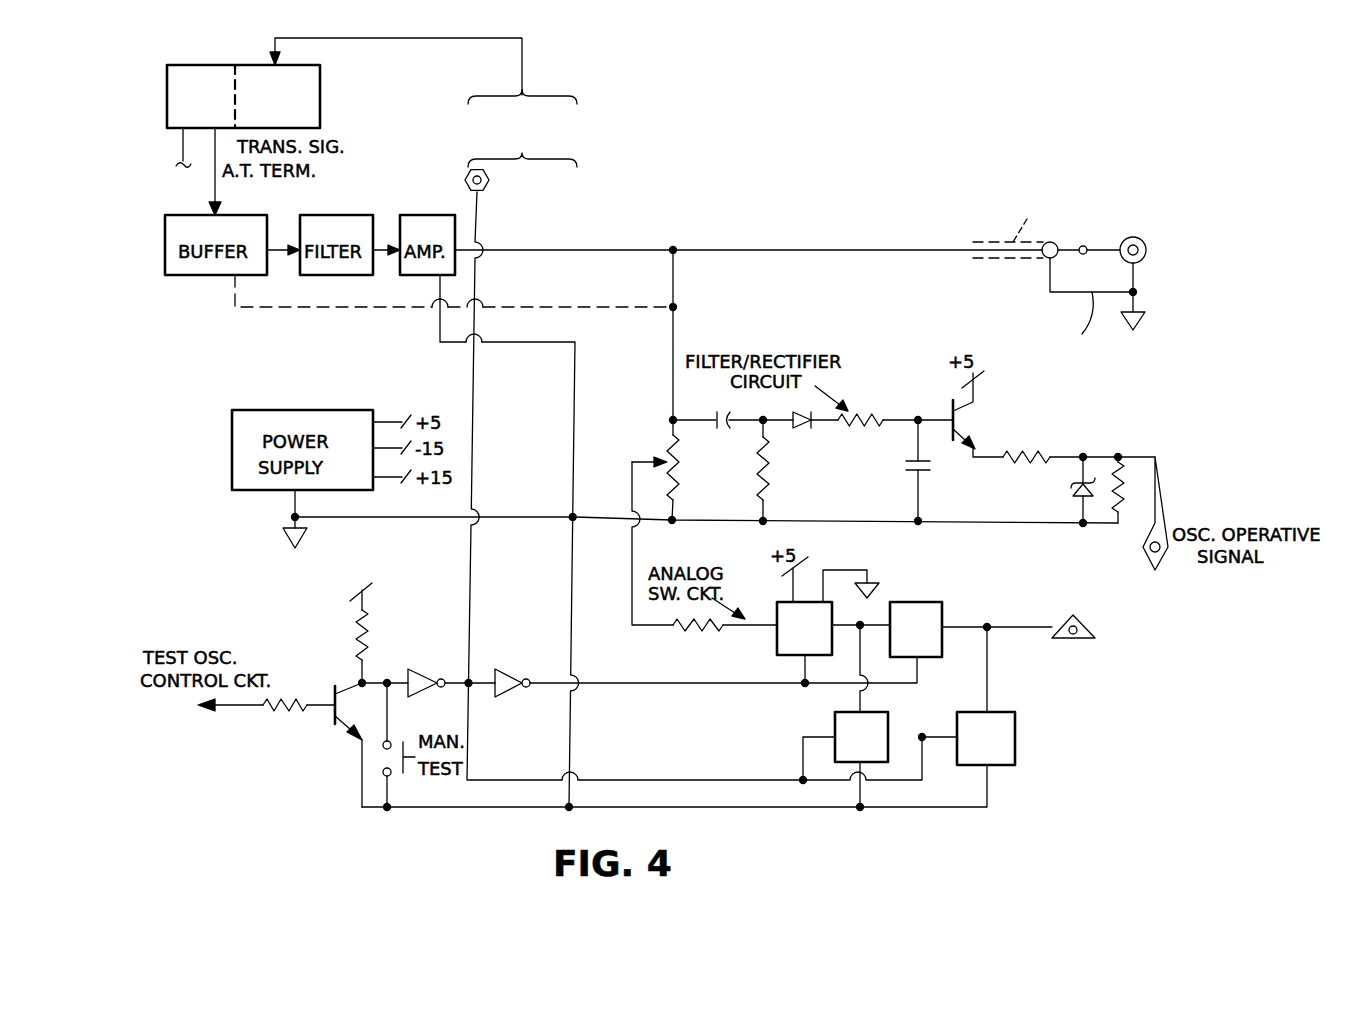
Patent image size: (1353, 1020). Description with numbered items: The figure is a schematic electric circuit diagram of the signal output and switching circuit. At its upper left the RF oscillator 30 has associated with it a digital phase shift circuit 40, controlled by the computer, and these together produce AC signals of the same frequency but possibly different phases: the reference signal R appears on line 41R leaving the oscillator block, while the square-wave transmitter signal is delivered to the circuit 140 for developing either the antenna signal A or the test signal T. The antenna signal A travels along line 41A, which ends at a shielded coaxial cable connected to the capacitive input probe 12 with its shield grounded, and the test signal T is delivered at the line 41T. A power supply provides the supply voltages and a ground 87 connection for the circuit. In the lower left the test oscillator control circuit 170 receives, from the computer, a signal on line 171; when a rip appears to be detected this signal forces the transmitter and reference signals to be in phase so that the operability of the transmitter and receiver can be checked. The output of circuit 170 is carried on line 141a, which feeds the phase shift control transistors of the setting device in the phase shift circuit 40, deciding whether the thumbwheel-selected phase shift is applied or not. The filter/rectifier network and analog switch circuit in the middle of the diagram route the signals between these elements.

The RF oscillator 30 is at (219, 63).
The digital phase shift circuit 40 is at (320, 92).
The reference signal line 41R is at (183, 147).
The signal developing circuit 140 is at (218, 292).
The control line 141a is at (478, 230).
The antenna signal line 41A is at (838, 250).
The capacitive input probe 12 is at (1134, 237).
The ground 87 is at (300, 537).
The test oscillator control circuit 170 is at (324, 672).
The computer signal line 171 is at (233, 708).
The test signal line 41T is at (1021, 614).